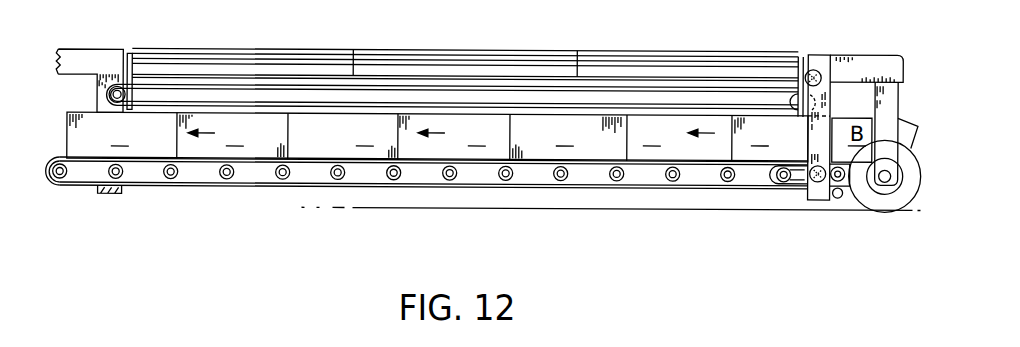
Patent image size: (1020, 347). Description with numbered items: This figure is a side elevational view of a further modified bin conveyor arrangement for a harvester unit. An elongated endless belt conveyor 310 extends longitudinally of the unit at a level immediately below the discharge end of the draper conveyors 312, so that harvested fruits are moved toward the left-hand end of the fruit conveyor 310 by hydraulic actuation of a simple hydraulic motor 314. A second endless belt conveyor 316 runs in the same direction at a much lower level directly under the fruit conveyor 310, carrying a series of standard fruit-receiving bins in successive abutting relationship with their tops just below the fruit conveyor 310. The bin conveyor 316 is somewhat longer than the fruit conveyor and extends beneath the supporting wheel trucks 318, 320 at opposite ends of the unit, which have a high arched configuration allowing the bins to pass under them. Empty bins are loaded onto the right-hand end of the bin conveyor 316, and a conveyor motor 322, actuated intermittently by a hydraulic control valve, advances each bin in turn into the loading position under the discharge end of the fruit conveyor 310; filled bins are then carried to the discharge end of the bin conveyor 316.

The endless belt conveyor 310 is at (313, 106).
The draper conveyors 312 is at (388, 49).
The hydraulic motor 314 is at (815, 66).
The second endless belt conveyor 316 is at (604, 186).
The supporting wheel truck 318 is at (74, 49).
The supporting wheel truck 320 is at (882, 61).
The conveyor motor 322 is at (818, 178).